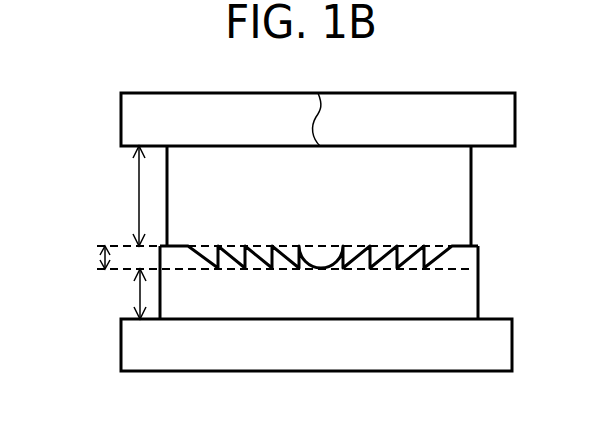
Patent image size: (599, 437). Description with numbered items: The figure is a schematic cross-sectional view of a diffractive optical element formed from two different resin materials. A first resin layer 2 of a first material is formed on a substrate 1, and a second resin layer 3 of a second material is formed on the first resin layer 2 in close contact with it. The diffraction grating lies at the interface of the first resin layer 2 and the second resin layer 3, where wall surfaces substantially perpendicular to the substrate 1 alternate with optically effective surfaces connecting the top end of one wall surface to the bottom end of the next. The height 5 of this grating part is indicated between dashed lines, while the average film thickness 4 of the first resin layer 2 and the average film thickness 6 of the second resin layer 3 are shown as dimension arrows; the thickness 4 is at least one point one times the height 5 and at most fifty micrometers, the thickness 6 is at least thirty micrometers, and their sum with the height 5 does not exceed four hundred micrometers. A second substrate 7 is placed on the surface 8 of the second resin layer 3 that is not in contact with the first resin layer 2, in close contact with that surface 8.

The substrate 1 is at (505, 341).
The first resin layer 2 is at (470, 290).
The second resin layer 3 is at (460, 198).
The average film thickness of the first resin layer 4 is at (138, 293).
The height of the grating part 5 is at (97, 261).
The average film thickness of the second resin layer 6 is at (138, 195).
The second substrate 7 is at (503, 118).
The surface of the second resin layer 8 is at (318, 93).